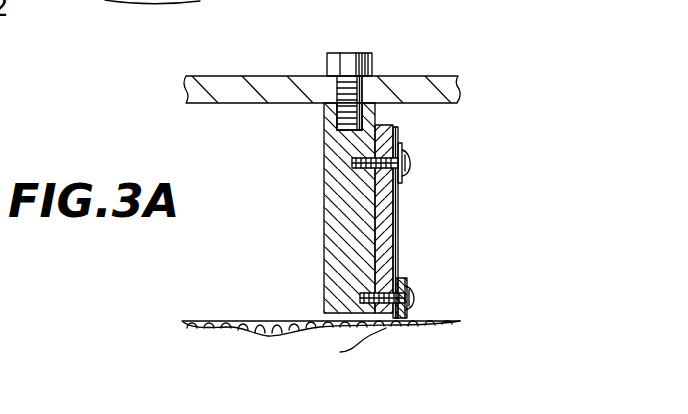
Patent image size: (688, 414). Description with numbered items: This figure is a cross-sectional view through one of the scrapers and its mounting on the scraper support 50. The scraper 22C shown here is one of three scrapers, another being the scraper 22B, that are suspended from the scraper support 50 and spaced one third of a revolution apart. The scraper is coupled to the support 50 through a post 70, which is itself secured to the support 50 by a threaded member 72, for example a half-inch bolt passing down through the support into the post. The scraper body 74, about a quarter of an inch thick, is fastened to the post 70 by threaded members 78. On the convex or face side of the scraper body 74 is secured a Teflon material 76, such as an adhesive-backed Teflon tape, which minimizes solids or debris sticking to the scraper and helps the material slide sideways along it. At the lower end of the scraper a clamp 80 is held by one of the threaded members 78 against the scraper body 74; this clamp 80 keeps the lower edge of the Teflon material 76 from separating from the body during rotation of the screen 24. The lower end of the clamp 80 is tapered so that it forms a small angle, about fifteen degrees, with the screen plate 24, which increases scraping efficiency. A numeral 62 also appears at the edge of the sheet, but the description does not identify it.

The scraper support 50 is at (261, 83).
The threaded member 72 is at (349, 53).
The post 70 is at (324, 196).
The scraper body 74 is at (382, 119).
The Teflon material 76 is at (398, 203).
The threaded member 78 is at (413, 163).
The clamp 80 is at (398, 278).
The screen 24 is at (268, 323).
The scraper 22C is at (435, 222).
The element 62 is at (48, 13).
The scraper 22B is at (88, 0).